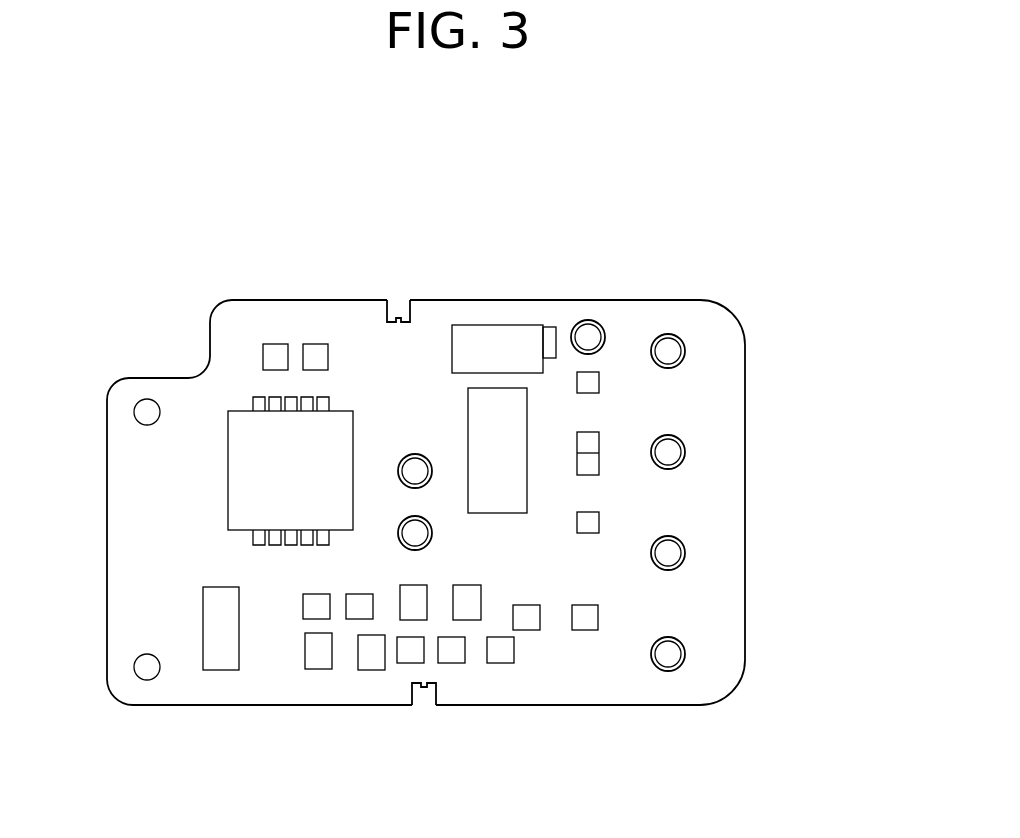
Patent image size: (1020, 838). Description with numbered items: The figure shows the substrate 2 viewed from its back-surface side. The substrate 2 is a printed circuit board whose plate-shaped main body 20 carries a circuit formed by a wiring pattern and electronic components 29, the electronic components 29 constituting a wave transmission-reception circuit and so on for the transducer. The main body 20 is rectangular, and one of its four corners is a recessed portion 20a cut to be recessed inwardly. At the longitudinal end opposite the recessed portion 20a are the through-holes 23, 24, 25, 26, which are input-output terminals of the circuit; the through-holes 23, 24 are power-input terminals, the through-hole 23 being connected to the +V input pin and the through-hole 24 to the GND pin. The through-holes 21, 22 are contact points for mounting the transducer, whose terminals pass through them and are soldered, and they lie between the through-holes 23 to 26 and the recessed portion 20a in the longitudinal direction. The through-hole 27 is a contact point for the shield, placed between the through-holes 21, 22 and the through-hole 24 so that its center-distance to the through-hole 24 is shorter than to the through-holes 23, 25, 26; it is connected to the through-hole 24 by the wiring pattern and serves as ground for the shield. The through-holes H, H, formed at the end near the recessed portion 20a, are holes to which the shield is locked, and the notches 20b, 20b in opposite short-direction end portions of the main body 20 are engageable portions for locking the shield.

The substrate 2 is at (797, 238).
The main body 20 is at (647, 697).
The recessed portion 20a is at (168, 377).
The notch 20b is at (398, 312).
The through-hole 21 is at (415, 535).
The through-hole 22 is at (415, 468).
The through-hole 23 is at (668, 654).
The through-hole 24 is at (668, 351).
The through-hole 25 is at (668, 553).
The through-hole 26 is at (668, 452).
The through-hole 27 is at (588, 337).
The electronic component 29 is at (246, 420).
The through-hole H is at (140, 411).